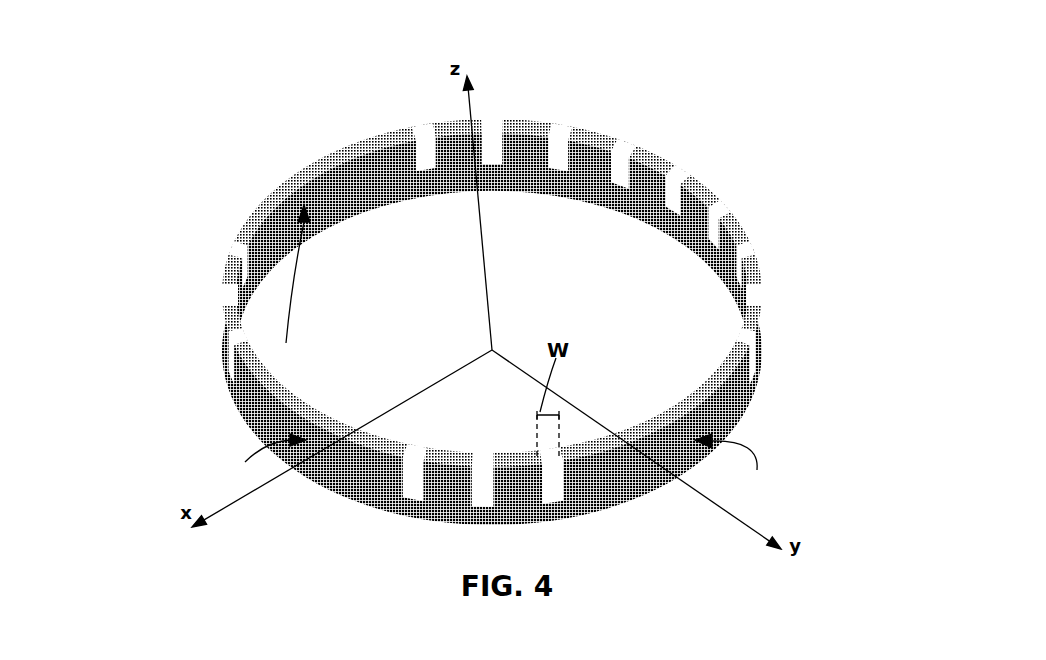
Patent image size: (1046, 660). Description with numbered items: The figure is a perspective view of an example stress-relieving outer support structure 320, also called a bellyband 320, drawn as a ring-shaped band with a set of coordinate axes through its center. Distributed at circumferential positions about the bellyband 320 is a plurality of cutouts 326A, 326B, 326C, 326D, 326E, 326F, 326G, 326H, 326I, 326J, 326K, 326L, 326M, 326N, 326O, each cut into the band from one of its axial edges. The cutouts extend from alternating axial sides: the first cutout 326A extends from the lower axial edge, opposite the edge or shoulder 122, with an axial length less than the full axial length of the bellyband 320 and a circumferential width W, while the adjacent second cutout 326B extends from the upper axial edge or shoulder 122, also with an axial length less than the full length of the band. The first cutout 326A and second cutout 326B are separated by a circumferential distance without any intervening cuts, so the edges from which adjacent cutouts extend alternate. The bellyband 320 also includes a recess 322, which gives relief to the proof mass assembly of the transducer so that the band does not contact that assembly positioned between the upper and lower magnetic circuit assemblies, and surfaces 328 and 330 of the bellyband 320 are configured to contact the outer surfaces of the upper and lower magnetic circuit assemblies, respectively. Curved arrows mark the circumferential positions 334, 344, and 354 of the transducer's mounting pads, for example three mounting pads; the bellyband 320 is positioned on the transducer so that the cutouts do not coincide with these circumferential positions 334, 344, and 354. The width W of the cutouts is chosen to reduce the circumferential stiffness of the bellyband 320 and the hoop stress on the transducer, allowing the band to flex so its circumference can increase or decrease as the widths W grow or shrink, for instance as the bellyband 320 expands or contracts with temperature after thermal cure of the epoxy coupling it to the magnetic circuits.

The stress-relieving outer support structure 320 is at (468, 307).
The edge/shoulder 122 is at (468, 311).
The recess 322 is at (492, 293).
The surface 328 is at (367, 160).
The surface 330 is at (352, 213).
The circumferential position 344 is at (290, 284).
The circumferential position 354 is at (252, 456).
The circumferential position 334 is at (737, 465).
The first cutout 326A is at (552, 493).
The second cutout 326B is at (482, 472).
The cutout 326C is at (417, 503).
The cutout 326D is at (232, 383).
The cutout 326E is at (220, 300).
The cutout 326F is at (237, 287).
The cutout 326G is at (428, 143).
The cutout 326H is at (498, 178).
The cutout 326I is at (562, 142).
The cutout 326J is at (622, 190).
The cutout 326K is at (683, 170).
The cutout 326L is at (722, 247).
The cutout 326M is at (746, 240).
The cutout 326N is at (767, 300).
The cutout 326O is at (745, 363).